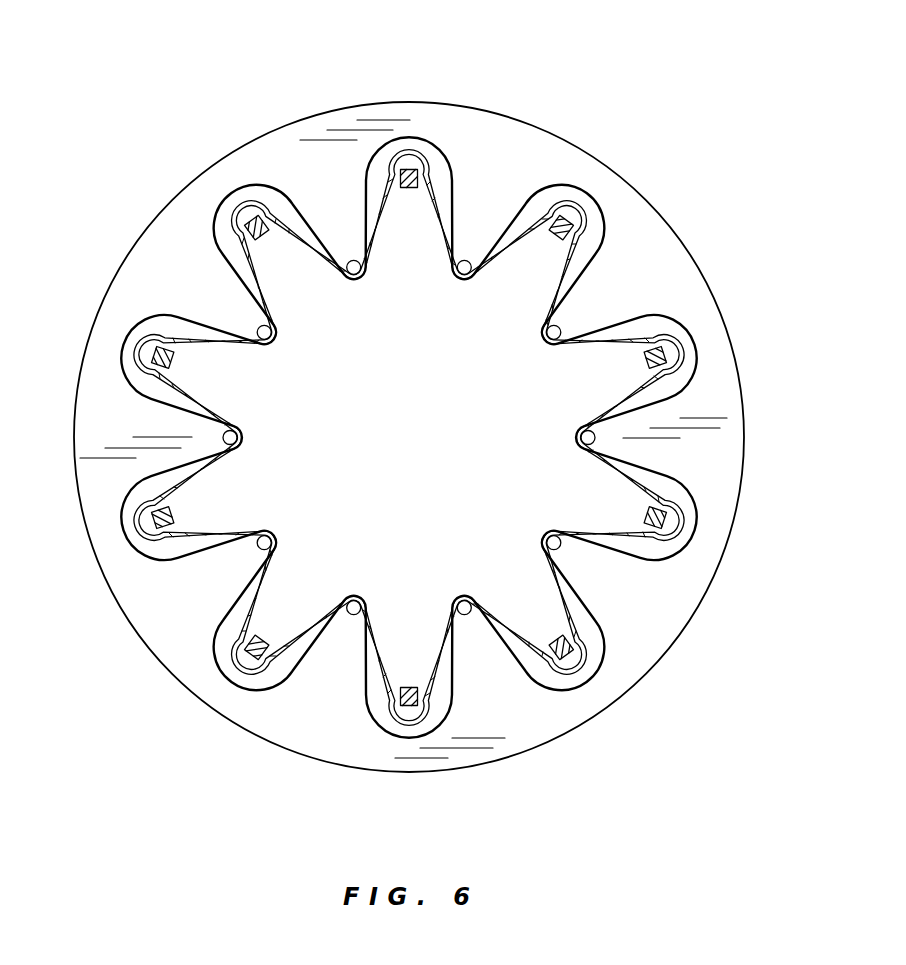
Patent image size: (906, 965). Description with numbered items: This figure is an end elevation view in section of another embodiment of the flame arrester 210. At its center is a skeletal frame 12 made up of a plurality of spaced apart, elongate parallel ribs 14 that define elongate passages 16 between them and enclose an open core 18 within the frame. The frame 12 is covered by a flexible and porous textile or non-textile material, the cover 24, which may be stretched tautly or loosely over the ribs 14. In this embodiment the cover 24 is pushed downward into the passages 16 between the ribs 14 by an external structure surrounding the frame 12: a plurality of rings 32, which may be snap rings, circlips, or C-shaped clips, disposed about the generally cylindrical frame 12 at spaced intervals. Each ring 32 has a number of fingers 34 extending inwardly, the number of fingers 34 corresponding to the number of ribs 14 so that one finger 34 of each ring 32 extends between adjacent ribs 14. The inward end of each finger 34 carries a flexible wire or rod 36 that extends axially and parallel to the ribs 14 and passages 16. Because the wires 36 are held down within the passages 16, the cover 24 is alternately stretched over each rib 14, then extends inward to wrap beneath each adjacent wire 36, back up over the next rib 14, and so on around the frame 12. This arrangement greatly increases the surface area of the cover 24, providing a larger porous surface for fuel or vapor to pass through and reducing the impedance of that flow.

The flame arrester 210 is at (130, 742).
The skeletal frame 12 is at (425, 167).
The ribs 14 is at (247, 233).
The passages 16 is at (499, 185).
The open core 18 is at (405, 439).
The cover 24 is at (163, 369).
The rings 32 is at (120, 610).
The fingers 34 is at (347, 673).
The wires 36 is at (271, 542).